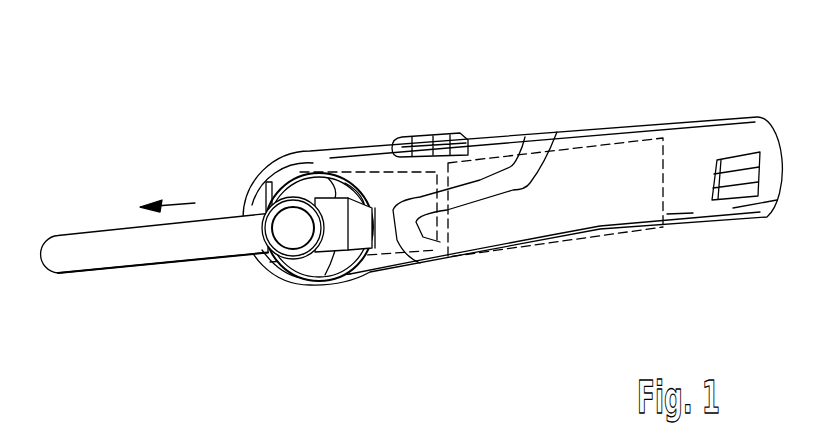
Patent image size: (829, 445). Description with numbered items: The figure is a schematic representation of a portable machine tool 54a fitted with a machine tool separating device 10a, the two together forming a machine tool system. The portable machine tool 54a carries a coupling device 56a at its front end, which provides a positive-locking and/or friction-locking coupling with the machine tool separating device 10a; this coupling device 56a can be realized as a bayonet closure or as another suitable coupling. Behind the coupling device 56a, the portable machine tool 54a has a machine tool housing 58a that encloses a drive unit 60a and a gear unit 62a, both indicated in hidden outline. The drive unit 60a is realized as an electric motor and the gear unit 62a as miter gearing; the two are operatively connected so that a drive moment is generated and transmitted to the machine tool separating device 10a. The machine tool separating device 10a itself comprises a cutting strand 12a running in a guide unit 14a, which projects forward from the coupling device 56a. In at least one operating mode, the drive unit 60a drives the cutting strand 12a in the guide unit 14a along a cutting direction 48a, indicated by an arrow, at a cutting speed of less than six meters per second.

The machine tool separating device 10a is at (112, 168).
The cutting strand 12a is at (85, 276).
The guide unit 14a is at (157, 257).
The cutting direction 48a is at (175, 201).
The portable machine tool 54a is at (690, 68).
The coupling device 56a is at (285, 312).
The machine tool housing 58a is at (597, 137).
The drive unit 60a is at (517, 257).
The gear unit 62a is at (397, 258).